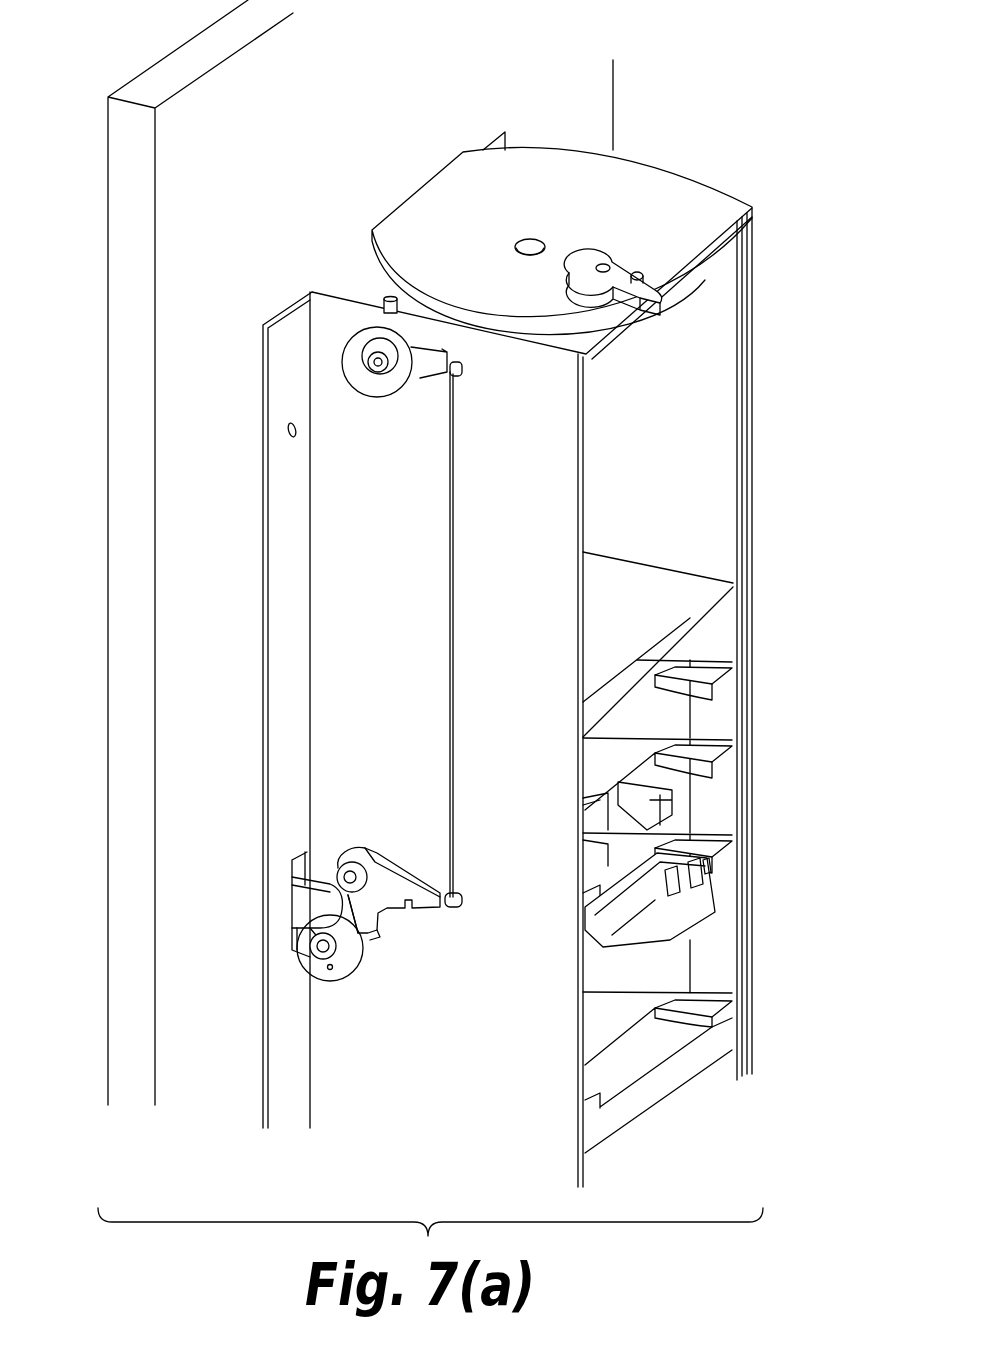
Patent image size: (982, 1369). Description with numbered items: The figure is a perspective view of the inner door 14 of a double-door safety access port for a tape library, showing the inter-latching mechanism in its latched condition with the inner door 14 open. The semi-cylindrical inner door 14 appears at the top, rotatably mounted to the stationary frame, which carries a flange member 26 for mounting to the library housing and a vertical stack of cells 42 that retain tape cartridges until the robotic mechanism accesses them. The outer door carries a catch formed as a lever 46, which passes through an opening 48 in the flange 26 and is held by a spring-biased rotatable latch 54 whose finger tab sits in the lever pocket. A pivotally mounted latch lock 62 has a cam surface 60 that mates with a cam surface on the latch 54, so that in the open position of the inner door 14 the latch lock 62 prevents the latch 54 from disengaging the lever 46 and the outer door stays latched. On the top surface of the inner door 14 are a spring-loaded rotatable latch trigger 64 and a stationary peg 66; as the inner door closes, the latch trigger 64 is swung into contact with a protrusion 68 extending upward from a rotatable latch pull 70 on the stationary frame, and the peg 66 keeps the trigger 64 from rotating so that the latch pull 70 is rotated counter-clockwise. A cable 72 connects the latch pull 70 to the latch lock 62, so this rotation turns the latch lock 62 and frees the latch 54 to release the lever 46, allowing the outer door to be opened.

The inner door 14 is at (635, 158).
The flange member 26 is at (262, 655).
The cell 42 is at (689, 657).
The lever 46 is at (290, 916).
The opening 48 is at (307, 851).
The latch 54 is at (345, 979).
The cam surface 60 is at (370, 938).
The latch lock 62 is at (380, 886).
The latch trigger 64 is at (625, 260).
The stationary peg 66 is at (653, 277).
The protrusion 68 is at (381, 298).
The latch pull 70 is at (392, 394).
The cable 72 is at (455, 588).